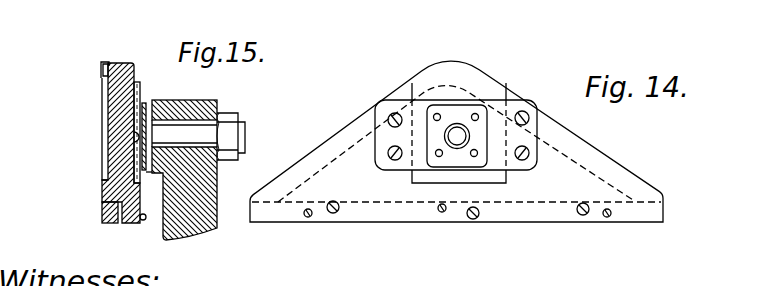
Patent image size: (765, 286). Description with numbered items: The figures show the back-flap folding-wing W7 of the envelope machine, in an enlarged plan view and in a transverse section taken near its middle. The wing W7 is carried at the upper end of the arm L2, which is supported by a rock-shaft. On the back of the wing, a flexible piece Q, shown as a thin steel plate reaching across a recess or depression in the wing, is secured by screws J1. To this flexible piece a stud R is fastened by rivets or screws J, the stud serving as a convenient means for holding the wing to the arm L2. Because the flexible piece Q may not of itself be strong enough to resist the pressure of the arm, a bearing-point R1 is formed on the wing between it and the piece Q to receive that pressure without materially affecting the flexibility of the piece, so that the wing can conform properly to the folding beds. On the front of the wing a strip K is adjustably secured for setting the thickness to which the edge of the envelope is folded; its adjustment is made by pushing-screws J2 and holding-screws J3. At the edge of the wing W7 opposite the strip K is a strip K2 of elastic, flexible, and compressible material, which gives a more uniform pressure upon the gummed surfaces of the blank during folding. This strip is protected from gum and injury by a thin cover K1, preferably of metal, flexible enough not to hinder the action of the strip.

In FIG. 14, the rivets or screws J is at (479, 107).
In FIG. 14, the screws J1 is at (518, 113).
In FIG. 15, the pushing-screws J2 is at (143, 223).
In FIG. 14, the pushing-screws J2 is at (442, 213).
In FIG. 14, the holding-screws J3 is at (483, 240).
In FIG. 15, the back-flap folding-wing W7 is at (129, 60).
In FIG. 14, the back-flap folding-wing W7 is at (376, 162).
In FIG. 15, the stud R is at (215, 137).
In FIG. 14, the stud R is at (457, 137).
In FIG. 15, the bearing-point R1 is at (138, 82).
In FIG. 15, the flexible piece Q is at (146, 109).
In FIG. 14, the flexible piece Q is at (521, 137).
In FIG. 15, the strip K is at (101, 217).
In FIG. 15, the thin cover K1 is at (103, 106).
In FIG. 15, the strip of elastic, flexible, and compressible material K2 is at (100, 65).
In FIG. 15, the arm L2 is at (206, 230).
In FIG. 14, the arm L2 is at (459, 133).